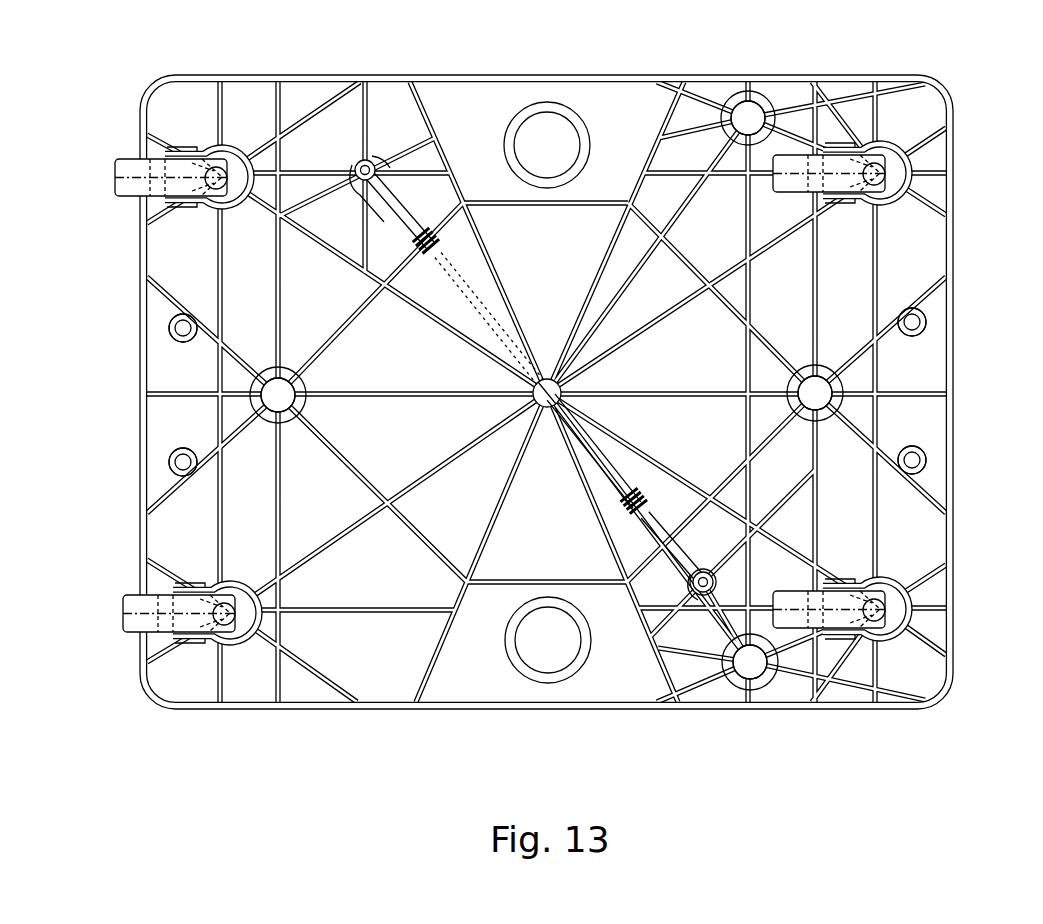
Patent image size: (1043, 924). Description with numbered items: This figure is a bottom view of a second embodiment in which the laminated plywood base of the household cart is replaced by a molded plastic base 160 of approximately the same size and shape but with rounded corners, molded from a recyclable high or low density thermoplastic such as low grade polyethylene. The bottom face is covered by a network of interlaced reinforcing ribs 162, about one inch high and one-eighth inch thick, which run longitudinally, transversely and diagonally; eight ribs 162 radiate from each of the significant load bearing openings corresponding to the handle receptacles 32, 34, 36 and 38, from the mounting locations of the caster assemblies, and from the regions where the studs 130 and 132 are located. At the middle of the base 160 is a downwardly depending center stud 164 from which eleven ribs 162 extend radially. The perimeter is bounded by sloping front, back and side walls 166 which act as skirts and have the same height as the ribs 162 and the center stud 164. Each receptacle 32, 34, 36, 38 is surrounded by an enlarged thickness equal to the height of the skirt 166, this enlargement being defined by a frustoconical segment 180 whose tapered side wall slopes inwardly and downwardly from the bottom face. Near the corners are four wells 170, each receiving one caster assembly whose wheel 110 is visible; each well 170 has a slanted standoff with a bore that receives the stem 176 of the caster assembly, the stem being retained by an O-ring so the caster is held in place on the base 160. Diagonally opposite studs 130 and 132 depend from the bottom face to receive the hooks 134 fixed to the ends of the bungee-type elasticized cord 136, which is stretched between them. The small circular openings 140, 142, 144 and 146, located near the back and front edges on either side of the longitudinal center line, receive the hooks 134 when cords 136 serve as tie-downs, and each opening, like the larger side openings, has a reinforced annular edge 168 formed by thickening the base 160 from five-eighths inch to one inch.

The receptacle 32 is at (740, 102).
The receptacle 34 is at (760, 675).
The receptacle 36 is at (808, 370).
The receptacle 38 is at (290, 390).
The wheel 110 is at (118, 183).
The stud 130 is at (420, 176).
The stud 132 is at (690, 596).
The hook 134 is at (352, 190).
The elasticized cord 136 is at (592, 443).
The circular opening 140 is at (928, 465).
The circular opening 142 is at (925, 320).
The circular opening 144 is at (170, 330).
The circular opening 146 is at (170, 460).
The molded plastic base 160 is at (140, 500).
The reinforcing ribs 162 is at (150, 274).
The center stud 164 is at (534, 386).
The sloping walls 166 is at (387, 80).
The reinforced annular edge 168 is at (547, 102).
The well 170 is at (228, 150).
The stem 176 is at (220, 188).
The frustoconical segment 180 is at (722, 142).